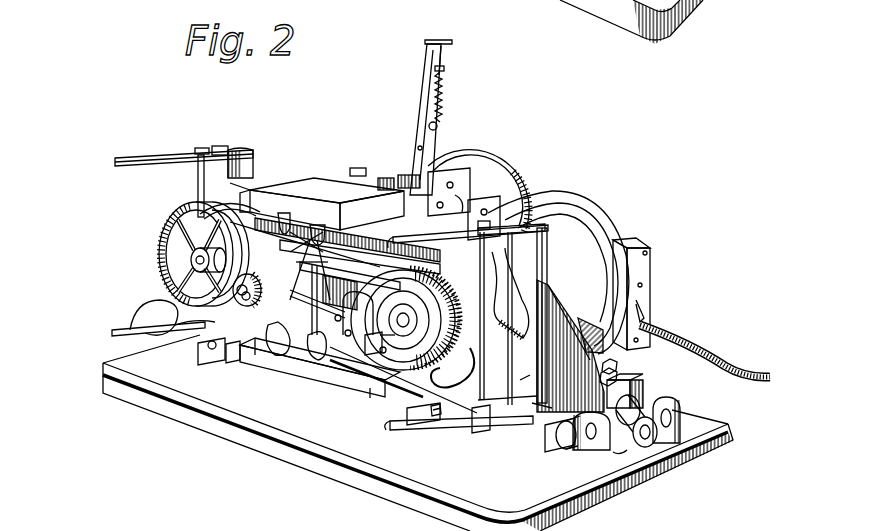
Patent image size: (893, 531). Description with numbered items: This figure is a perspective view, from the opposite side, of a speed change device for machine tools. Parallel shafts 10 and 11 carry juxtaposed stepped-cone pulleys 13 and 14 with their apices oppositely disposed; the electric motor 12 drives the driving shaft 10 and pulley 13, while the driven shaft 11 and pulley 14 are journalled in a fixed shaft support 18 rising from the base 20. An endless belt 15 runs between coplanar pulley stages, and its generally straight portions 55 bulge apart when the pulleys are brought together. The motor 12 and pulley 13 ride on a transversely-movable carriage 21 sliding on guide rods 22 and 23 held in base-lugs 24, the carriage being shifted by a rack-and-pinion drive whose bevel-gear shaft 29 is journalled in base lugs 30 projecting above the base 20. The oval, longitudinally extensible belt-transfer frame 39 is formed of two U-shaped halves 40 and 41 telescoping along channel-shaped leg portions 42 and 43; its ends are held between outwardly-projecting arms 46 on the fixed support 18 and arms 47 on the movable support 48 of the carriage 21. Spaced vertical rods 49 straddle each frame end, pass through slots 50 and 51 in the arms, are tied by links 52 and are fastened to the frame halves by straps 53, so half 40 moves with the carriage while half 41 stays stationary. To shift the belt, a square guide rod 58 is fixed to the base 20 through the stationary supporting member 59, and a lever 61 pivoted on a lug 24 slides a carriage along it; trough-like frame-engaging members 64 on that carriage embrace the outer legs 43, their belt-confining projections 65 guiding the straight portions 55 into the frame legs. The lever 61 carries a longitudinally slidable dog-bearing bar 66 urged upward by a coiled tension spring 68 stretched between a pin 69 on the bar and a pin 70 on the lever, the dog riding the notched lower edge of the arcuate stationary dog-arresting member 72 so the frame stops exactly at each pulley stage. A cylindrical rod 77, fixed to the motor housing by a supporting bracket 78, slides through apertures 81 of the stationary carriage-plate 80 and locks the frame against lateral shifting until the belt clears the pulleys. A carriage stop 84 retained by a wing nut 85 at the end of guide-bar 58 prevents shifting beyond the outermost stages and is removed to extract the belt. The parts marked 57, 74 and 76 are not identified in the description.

The driving shaft 10 is at (382, 340).
The driven shaft 11 is at (191, 259).
The electric motor 12 is at (598, 288).
The driving stepped-cone pulley 13 is at (438, 310).
The driven stepped-cone pulley 14 is at (170, 228).
The endless belt 15 is at (372, 345).
The fixed shaft support 18 is at (258, 332).
The base 20 is at (517, 497).
The motor carriage 21 is at (625, 379).
The guide rod 22 is at (650, 400).
The guide rod 23 is at (562, 432).
The base-lugs 24 is at (680, 403).
The rotatable shaft 29 is at (585, 452).
The base lugs 30 is at (627, 450).
The belt-transfer frame 39 is at (262, 180).
The U-shaped frame half 40 is at (523, 385).
The U-shaped frame half 41 is at (200, 205).
The leg portions 42 is at (382, 352).
The leg portions 43 is at (330, 412).
The outwardly-projecting arms 46 is at (122, 161).
The outwardly-projecting arms 47 is at (400, 432).
The movable support 48 is at (536, 293).
The vertical rods 49 is at (256, 160).
The slots 50 is at (166, 157).
The slots 51 is at (410, 432).
The links 52 is at (220, 147).
The straps 53 is at (178, 176).
The straight portions 55 is at (335, 276).
The bracket 57 is at (482, 434).
The square guide rod 58 is at (258, 308).
The stationary supporting member 59 is at (338, 320).
The lever 61 is at (426, 77).
The frame-engaging members 64 is at (275, 277).
The belt-confining projections 65 is at (233, 355).
The longitudinally slidable bar 66 is at (446, 58).
The coiled tension spring 68 is at (445, 102).
The pin 69 is at (444, 70).
The pin 70 is at (438, 122).
The dog-arresting member 72 is at (432, 183).
The handle 74 is at (434, 40).
The comb 76 is at (386, 185).
The cylindrical rod 77 is at (342, 187).
The supporting bracket 78 is at (482, 218).
The carriage-plate 80 is at (360, 172).
The apertures 81 is at (408, 182).
The carriage stop 84 is at (185, 279).
The wing nut 85 is at (243, 292).